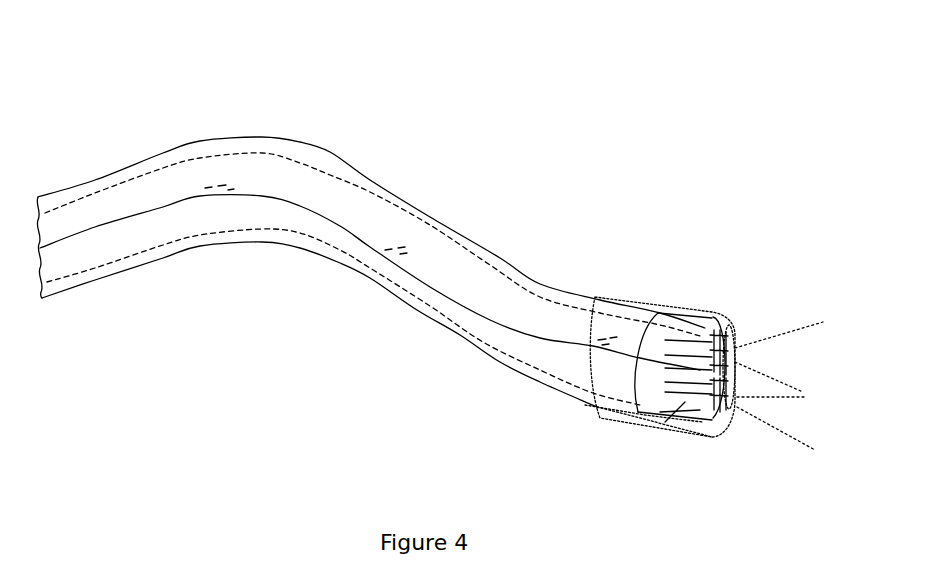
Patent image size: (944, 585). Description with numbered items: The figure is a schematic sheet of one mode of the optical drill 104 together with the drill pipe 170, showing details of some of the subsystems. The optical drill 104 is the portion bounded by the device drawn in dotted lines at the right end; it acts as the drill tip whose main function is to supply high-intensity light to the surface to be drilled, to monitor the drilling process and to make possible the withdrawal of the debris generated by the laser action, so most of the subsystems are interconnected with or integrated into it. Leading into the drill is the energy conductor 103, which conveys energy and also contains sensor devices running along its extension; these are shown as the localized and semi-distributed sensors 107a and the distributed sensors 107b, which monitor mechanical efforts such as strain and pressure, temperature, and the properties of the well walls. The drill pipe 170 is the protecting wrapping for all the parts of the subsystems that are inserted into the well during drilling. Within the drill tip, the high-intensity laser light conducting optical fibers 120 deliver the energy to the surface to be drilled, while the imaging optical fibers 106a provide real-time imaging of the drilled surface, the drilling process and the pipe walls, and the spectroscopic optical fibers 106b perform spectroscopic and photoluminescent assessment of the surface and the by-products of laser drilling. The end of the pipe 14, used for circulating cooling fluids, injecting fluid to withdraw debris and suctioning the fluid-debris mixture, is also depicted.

The energy conductor 103 is at (167, 168).
The drill pipe 170 is at (262, 133).
The localized and semi-distributed sensors 107a is at (233, 178).
The distributed sensors 107b is at (292, 213).
The pipe 14 is at (695, 328).
The optical drill 104 is at (595, 405).
The high-intensity laser light conducting optical fibers 120 is at (665, 422).
The imaging optical fibers 106a is at (730, 320).
The spectroscopic optical fibers 106b is at (735, 408).